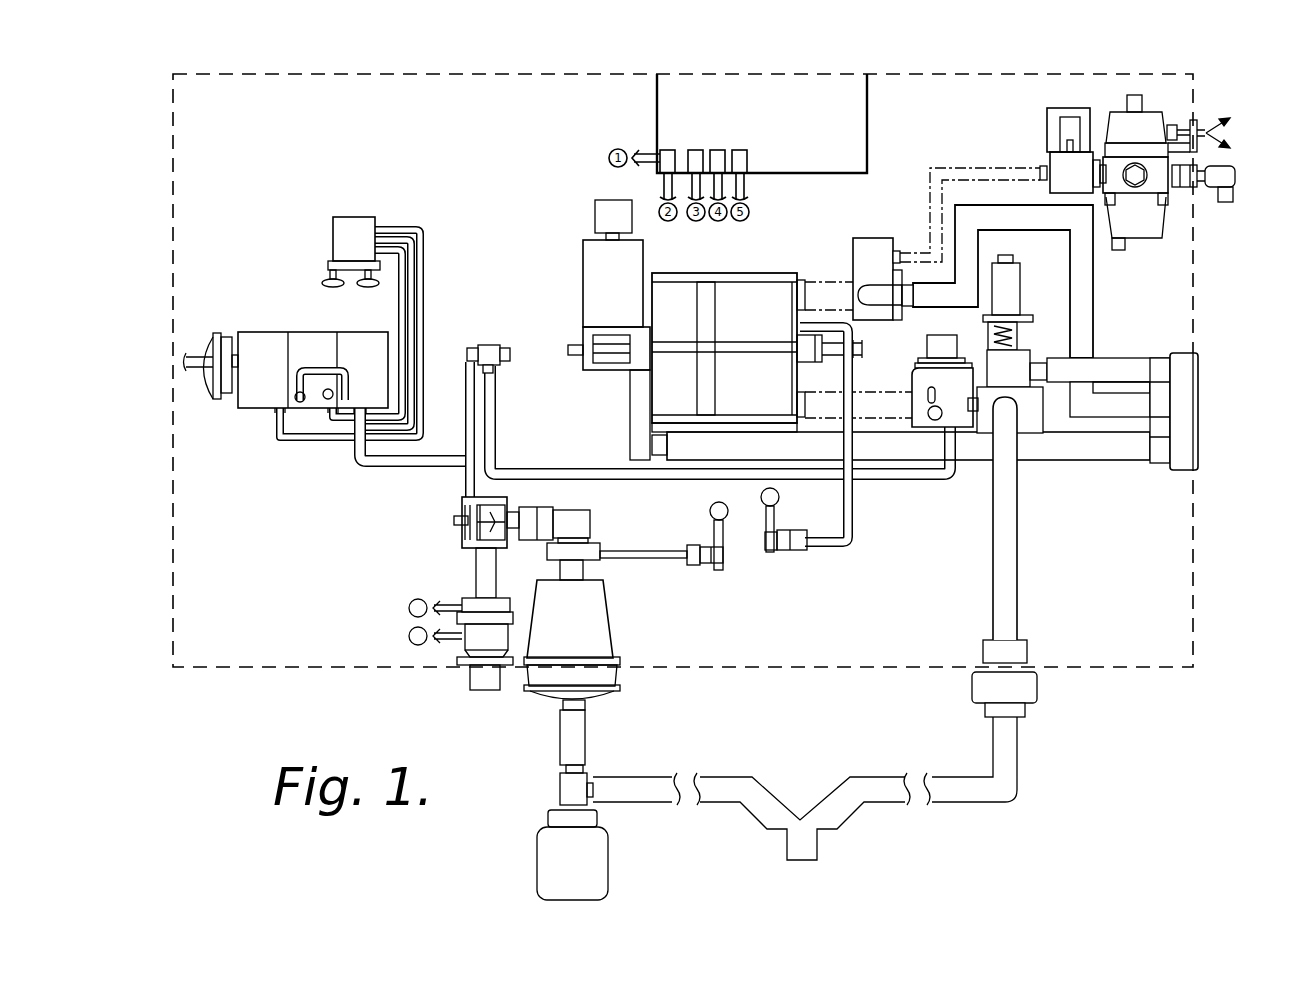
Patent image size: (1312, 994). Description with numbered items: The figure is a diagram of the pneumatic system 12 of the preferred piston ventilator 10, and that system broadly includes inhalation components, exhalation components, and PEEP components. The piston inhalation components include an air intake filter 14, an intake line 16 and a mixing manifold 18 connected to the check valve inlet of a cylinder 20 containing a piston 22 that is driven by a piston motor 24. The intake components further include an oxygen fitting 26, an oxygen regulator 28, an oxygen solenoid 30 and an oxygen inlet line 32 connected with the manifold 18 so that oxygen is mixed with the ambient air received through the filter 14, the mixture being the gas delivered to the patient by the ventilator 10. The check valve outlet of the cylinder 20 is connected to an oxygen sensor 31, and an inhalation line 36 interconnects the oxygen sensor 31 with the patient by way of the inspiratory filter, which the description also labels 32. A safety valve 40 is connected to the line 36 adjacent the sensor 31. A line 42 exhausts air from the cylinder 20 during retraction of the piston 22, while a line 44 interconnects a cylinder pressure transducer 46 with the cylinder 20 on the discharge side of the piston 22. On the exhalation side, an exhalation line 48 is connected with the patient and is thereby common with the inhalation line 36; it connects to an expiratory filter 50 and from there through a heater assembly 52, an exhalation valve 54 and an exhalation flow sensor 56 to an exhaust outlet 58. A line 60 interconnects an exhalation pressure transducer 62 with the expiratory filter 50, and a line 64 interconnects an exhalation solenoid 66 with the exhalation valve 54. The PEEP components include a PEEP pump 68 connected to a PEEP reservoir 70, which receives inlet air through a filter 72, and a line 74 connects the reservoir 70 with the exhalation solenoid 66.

The ventilator 10 is at (1160, 712).
The pneumatic system 12 is at (322, 678).
The air intake filter 14 is at (1182, 398).
The intake line 16 is at (1086, 330).
The mixing manifold 18 is at (875, 262).
The cylinder 20 is at (775, 282).
The piston 22 is at (698, 338).
The piston motor 24 is at (593, 300).
The oxygen fitting 26 is at (1225, 173).
The oxygen regulator 28 is at (1153, 118).
The oxygen solenoid 30 is at (1082, 108).
The oxygen sensor 31 is at (938, 347).
The oxygen inlet line 32 is at (990, 170).
The inhalation line 36 is at (1008, 561).
The safety valve 40 is at (1008, 308).
The line 42 is at (685, 447).
The line 44 is at (850, 497).
The cylinder pressure transducer 46 is at (800, 536).
The exhalation line 48 is at (740, 778).
The expiratory filter 50 is at (580, 640).
The heater assembly 52 is at (578, 528).
The exhalation valve 54 is at (462, 527).
The exhalation flow sensor 56 is at (484, 614).
The exhaust outlet 58 is at (482, 686).
The line 60 is at (633, 556).
The exhalation pressure transducer 62 is at (733, 540).
The line 64 is at (470, 395).
The exhalation solenoid 66 is at (487, 344).
The PEEP pump 68 is at (356, 232).
The PEEP reservoir 70 is at (312, 346).
The filter 72 is at (230, 348).
The line 74 is at (430, 462).